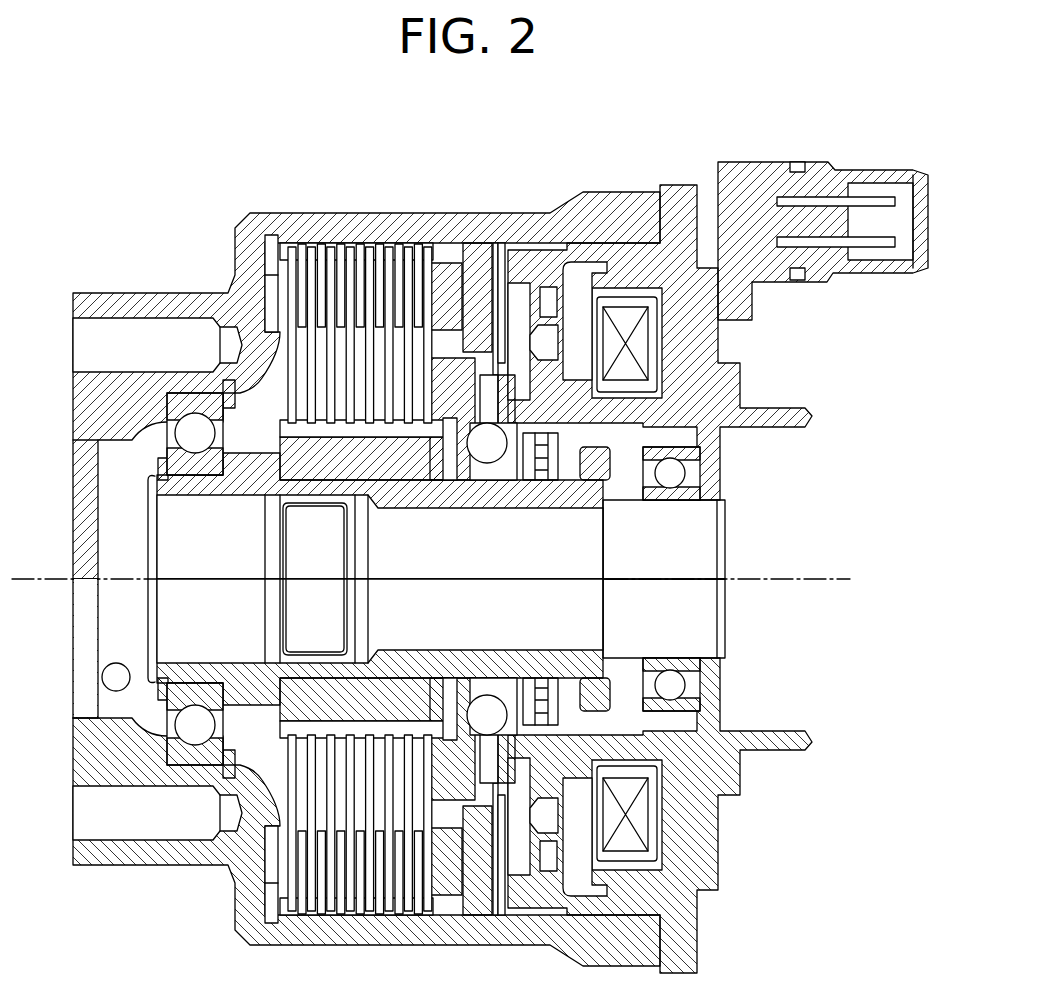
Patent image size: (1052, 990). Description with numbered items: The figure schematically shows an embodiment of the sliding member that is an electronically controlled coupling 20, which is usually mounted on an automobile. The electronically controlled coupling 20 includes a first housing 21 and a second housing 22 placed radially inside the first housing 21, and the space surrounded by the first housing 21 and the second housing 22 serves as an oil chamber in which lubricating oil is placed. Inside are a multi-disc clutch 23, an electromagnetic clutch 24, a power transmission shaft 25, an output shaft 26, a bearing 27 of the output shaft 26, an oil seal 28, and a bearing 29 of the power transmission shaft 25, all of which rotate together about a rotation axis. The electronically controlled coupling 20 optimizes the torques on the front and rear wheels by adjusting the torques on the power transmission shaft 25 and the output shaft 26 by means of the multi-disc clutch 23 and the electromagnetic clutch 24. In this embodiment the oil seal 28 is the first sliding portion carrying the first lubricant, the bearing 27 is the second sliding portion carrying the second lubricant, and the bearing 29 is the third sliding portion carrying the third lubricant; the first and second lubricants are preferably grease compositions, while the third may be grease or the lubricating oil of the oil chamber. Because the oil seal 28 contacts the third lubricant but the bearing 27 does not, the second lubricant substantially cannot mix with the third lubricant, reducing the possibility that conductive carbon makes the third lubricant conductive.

The electronically controlled coupling 20 is at (196, 190).
The first housing 21 is at (243, 253).
The second housing 22 is at (630, 235).
The multi-disc clutch 23 is at (357, 230).
The electromagnetic clutch 24 is at (496, 236).
The power transmission shaft 25 is at (238, 687).
The output shaft 26 is at (698, 548).
The bearing of the output shaft 27 is at (672, 473).
The oil seal 28 is at (605, 690).
The bearing of the power transmission shaft 29 is at (487, 712).